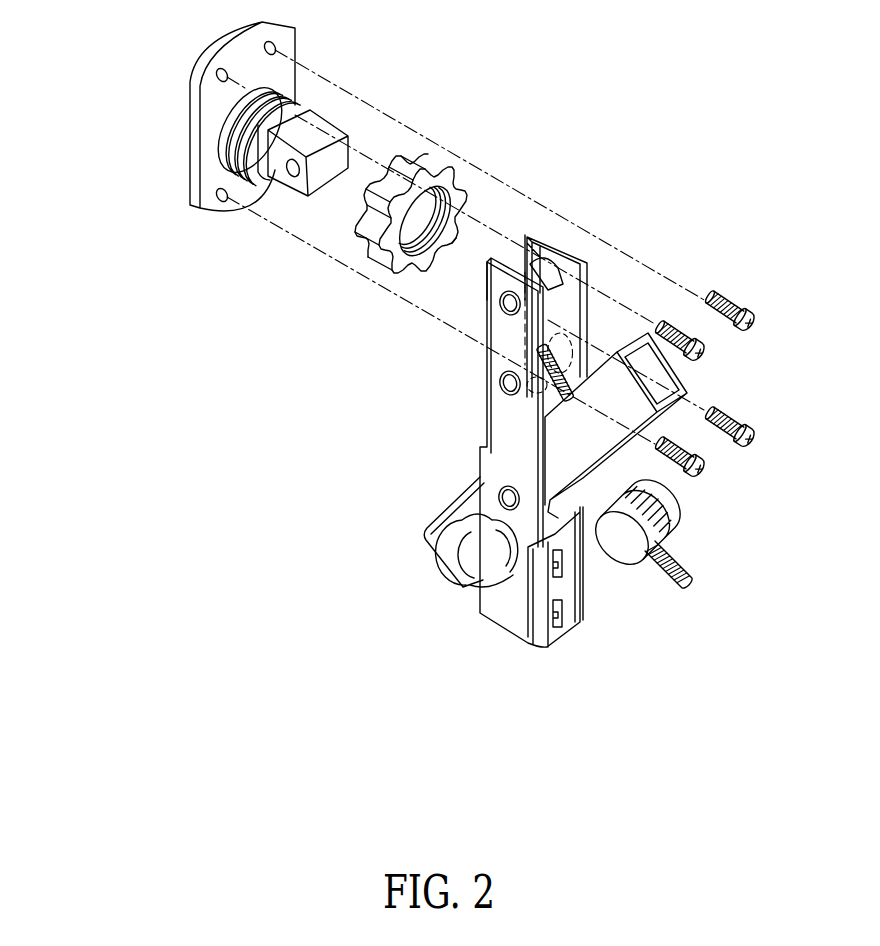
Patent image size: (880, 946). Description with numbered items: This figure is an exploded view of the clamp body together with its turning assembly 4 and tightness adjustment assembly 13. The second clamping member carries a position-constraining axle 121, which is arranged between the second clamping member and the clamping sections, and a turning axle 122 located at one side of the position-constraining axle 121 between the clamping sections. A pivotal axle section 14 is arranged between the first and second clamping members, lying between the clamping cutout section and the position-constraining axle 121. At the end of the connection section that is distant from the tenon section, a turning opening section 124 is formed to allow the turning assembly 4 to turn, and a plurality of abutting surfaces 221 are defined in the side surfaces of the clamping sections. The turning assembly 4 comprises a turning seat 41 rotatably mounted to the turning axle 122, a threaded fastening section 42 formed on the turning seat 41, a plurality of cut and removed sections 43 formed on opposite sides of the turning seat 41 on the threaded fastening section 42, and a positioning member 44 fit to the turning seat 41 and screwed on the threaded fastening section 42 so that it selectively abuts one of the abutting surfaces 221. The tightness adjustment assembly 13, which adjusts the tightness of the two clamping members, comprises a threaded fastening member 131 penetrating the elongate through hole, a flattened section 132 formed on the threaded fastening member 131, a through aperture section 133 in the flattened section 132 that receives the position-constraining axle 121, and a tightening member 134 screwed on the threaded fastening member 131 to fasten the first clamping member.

The turning assembly 4 is at (95, 52).
The turning seat 41 is at (227, 38).
The threaded fastening section 42 is at (233, 104).
The cut and removed sections 43 is at (253, 153).
The positioning member 44 is at (357, 240).
The position-constraining axle 121 is at (500, 392).
The turning axle 122 is at (500, 308).
The turning opening section 124 is at (507, 252).
The pivotal axle section 14 is at (493, 484).
The abutting surfaces 221 is at (543, 248).
The tightness adjustment assembly 13 is at (767, 212).
The threaded fastening member 131 is at (686, 588).
The flattened section 132 is at (552, 346).
The through aperture section 133 is at (522, 276).
The tightening member 134 is at (680, 512).